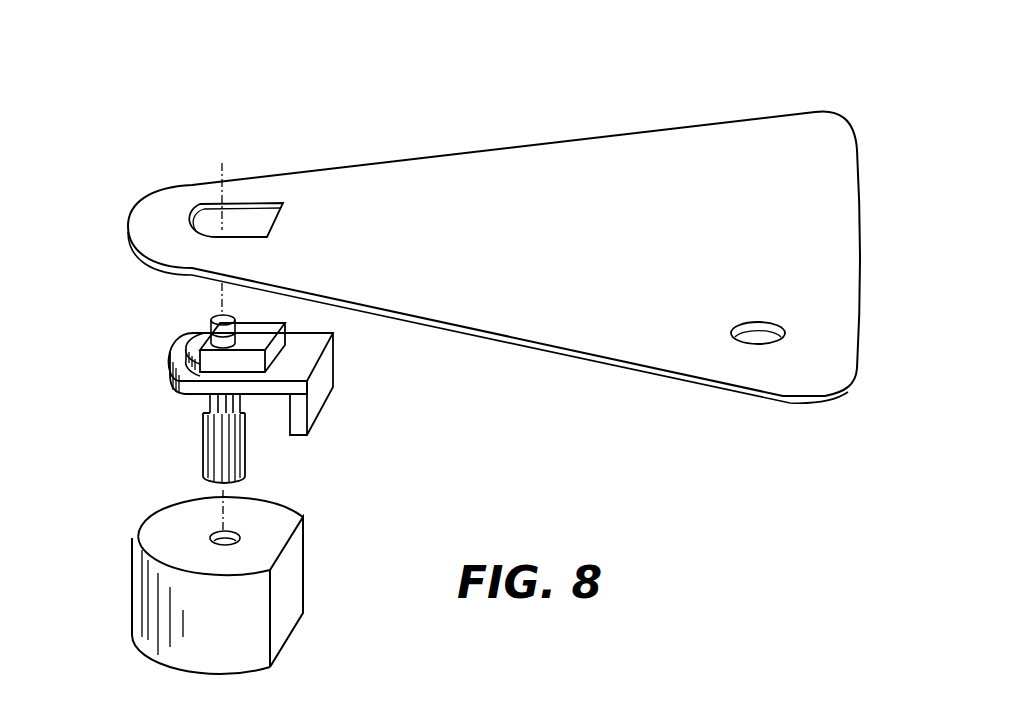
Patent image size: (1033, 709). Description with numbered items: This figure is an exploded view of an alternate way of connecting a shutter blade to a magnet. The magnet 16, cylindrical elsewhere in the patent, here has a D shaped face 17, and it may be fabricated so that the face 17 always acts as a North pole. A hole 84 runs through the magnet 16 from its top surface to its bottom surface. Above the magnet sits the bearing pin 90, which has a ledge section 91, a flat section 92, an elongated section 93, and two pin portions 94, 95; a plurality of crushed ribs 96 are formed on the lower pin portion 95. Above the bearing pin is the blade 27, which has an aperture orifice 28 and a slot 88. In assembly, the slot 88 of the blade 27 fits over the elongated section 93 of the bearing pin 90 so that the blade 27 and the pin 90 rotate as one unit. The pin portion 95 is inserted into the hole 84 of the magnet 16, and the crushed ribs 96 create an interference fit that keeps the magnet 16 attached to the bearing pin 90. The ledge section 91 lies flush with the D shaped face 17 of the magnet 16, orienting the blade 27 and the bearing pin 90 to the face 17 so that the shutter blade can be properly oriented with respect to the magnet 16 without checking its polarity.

The magnet 16 is at (135, 571).
The D shaped face 17 is at (292, 583).
The shutter blade 27 is at (577, 150).
The aperture orifice 28 is at (758, 328).
The hole 84 is at (210, 538).
The slot 88 is at (247, 210).
The bearing pin 90 is at (255, 346).
The ledge section 91 is at (333, 388).
The flat section 92 is at (308, 343).
The elongated section 93 is at (257, 332).
The pin portion 94 is at (212, 317).
The pin portion 95 is at (205, 397).
The crushed ribs 96 is at (246, 455).